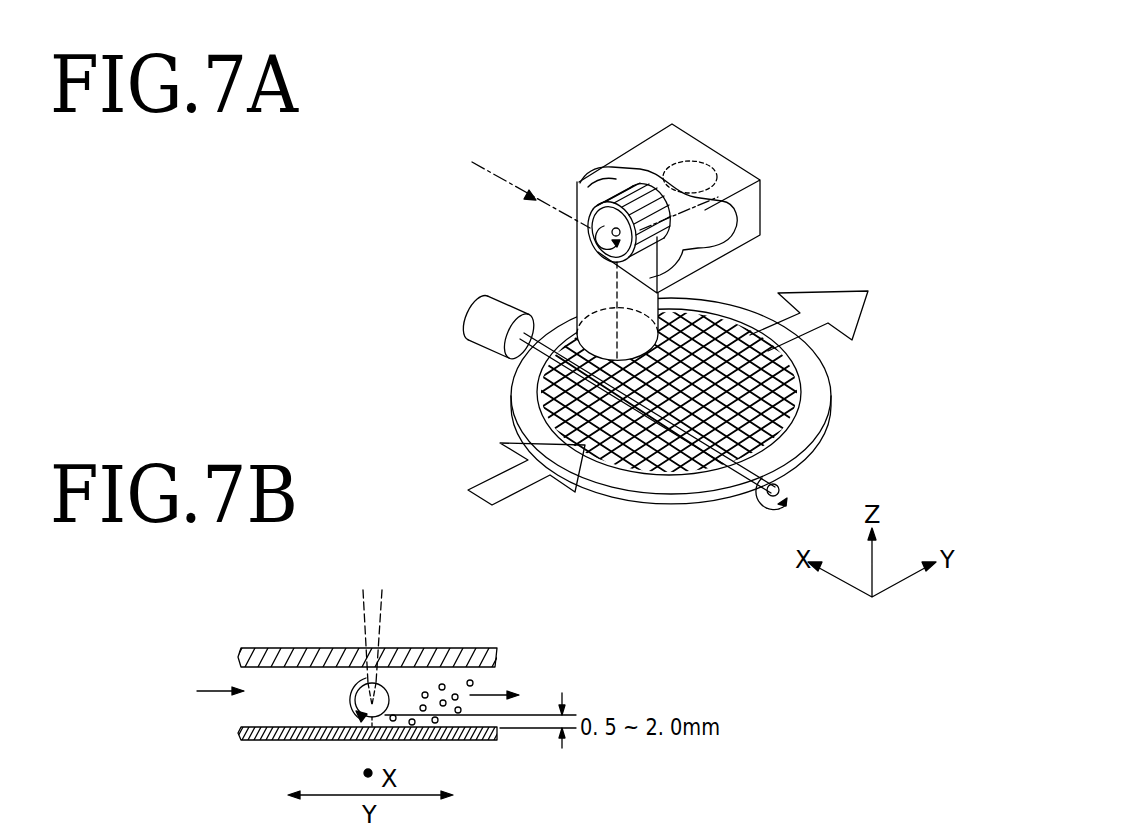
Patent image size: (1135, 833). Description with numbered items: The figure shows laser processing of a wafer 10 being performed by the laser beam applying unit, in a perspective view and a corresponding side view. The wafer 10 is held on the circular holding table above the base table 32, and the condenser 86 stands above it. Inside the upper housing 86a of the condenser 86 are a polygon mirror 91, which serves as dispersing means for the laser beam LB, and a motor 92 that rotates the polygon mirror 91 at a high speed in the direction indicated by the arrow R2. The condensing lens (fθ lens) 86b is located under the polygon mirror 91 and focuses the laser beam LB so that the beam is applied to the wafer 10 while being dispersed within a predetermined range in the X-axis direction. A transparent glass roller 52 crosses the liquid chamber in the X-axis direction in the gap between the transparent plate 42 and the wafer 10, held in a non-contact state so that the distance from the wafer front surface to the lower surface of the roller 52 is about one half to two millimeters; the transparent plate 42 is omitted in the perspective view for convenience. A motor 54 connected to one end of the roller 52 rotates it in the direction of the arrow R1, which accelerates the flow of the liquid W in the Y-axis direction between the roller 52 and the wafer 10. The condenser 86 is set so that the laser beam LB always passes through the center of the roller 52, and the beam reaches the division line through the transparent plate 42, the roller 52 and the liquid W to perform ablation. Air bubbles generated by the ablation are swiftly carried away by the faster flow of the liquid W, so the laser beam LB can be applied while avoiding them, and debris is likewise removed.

In FIG. 7A, the wafer 10 is at (797, 394).
In FIG. 7B, the wafer 10 is at (480, 742).
In FIG. 7A, the base table 32 is at (816, 420).
In FIG. 7B, the transparent plate 42 is at (444, 647).
In FIG. 7A, the roller 52 is at (764, 503).
In FIG. 7B, the roller 52 is at (382, 686).
In FIG. 7A, the motor 54 is at (475, 305).
In FIG. 7A, the condenser 86 is at (593, 292).
In FIG. 7A, the upper housing 86a is at (680, 140).
In FIG. 7A, the condensing lens (fθ lens) 86b is at (660, 302).
In FIG. 7A, the polygon mirror 91 is at (588, 262).
In FIG. 7A, the motor 92 is at (732, 246).
In FIG. 7A, the arrow R1 is at (796, 483).
In FIG. 7B, the arrow R1 is at (349, 690).
In FIG. 7A, the arrow R2 is at (592, 220).
In FIG. 7A, the laser beam LB is at (482, 172).
In FIG. 7B, the laser beam LB is at (362, 618).
In FIG. 7A, the liquid W is at (675, 400).
In FIG. 7B, the liquid W is at (357, 694).